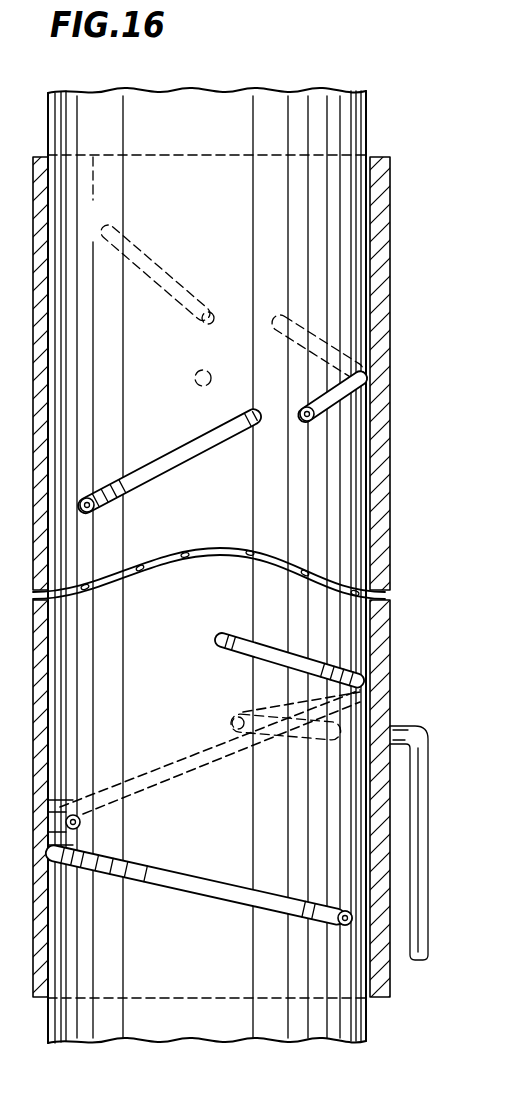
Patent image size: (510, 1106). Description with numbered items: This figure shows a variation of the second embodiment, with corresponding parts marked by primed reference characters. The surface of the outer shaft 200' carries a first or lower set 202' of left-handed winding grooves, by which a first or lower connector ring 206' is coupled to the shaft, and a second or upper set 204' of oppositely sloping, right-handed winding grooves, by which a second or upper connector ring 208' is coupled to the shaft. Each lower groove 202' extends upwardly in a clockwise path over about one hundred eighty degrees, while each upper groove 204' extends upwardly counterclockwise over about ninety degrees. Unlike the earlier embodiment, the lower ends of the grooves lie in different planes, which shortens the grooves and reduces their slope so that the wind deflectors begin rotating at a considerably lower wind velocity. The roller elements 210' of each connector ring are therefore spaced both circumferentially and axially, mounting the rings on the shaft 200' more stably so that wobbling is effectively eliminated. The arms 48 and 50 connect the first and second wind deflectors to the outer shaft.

The outer shaft 200' is at (242, 565).
The second or upper set of winding grooves 204' is at (268, 369).
The roller elements 210' is at (200, 604).
The arm 50 is at (212, 378).
The second or upper connector ring 208' is at (246, 373).
The first or lower connector ring 206' is at (249, 798).
The first or lower set of winding grooves 202' is at (204, 778).
The arm 48 is at (428, 872).